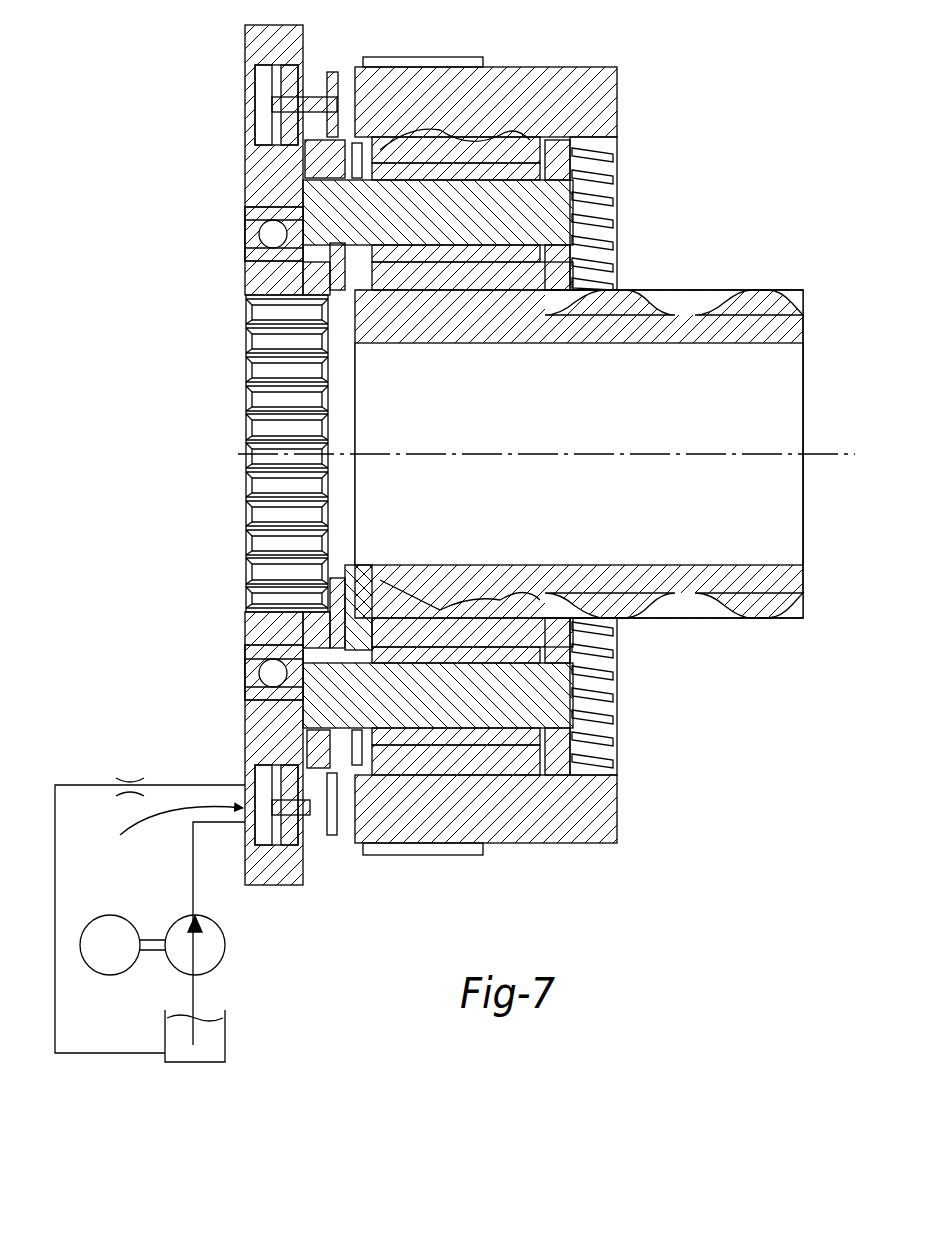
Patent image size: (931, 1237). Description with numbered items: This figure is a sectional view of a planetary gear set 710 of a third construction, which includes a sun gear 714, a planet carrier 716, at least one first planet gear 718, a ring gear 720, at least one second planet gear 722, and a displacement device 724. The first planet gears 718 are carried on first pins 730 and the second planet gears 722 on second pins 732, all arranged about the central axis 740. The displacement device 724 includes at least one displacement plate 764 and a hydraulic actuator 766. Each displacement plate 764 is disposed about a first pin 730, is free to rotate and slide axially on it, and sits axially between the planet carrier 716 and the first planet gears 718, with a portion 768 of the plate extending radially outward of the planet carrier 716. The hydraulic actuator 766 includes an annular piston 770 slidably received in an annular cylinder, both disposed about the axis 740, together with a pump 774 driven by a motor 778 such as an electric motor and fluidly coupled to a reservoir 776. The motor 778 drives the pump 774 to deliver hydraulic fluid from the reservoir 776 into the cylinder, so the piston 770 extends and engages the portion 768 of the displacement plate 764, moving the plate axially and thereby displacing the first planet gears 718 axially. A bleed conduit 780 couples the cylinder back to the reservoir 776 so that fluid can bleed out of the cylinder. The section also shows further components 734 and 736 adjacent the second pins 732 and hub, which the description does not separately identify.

The planetary gear set 710 is at (622, 54).
The sun gear 714 is at (605, 332).
The planet carrier 716 is at (320, 155).
The first planet gear 718 is at (450, 772).
The ring gear 720 is at (510, 822).
The second planet gear 722 is at (512, 120).
The displacement device 724 is at (185, 917).
The first pin 730 is at (493, 680).
The second pin 732 is at (415, 232).
The friction plates 734 is at (425, 650).
The separator plates 736 is at (510, 252).
The axis 740 is at (697, 452).
The displacement plate 764 is at (345, 590).
The hydraulic actuator 766 is at (166, 827).
The portion of the displacement plate 768 is at (333, 822).
The piston 770 is at (310, 828).
The pump 774 is at (183, 915).
The reservoir 776 is at (180, 1064).
The motor 778 is at (125, 973).
The bleed conduit 780 is at (55, 797).